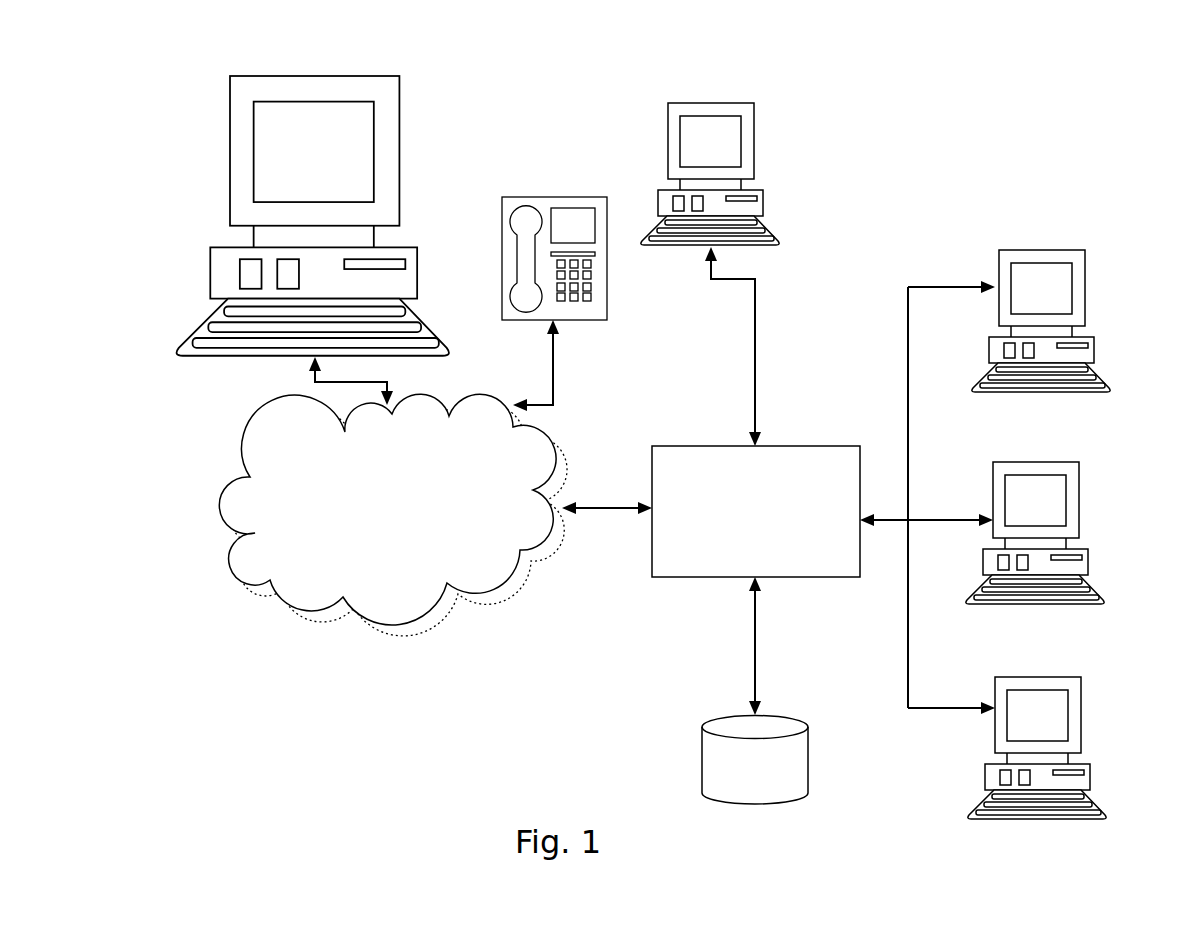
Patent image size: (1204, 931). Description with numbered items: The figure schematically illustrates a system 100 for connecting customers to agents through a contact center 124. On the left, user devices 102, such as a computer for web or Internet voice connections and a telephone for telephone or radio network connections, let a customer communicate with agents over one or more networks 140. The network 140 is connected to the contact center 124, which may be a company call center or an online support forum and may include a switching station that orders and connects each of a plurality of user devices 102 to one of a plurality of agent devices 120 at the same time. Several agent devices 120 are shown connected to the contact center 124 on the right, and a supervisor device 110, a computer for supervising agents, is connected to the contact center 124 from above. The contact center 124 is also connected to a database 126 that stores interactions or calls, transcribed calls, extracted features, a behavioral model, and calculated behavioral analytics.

The system 100 is at (1069, 64).
The user device 102 is at (550, 198).
The supervisor device 110 is at (722, 103).
The agent device 120 is at (1053, 250).
The contact center 124 is at (725, 494).
The database 126 is at (778, 774).
The network 140 is at (422, 537).